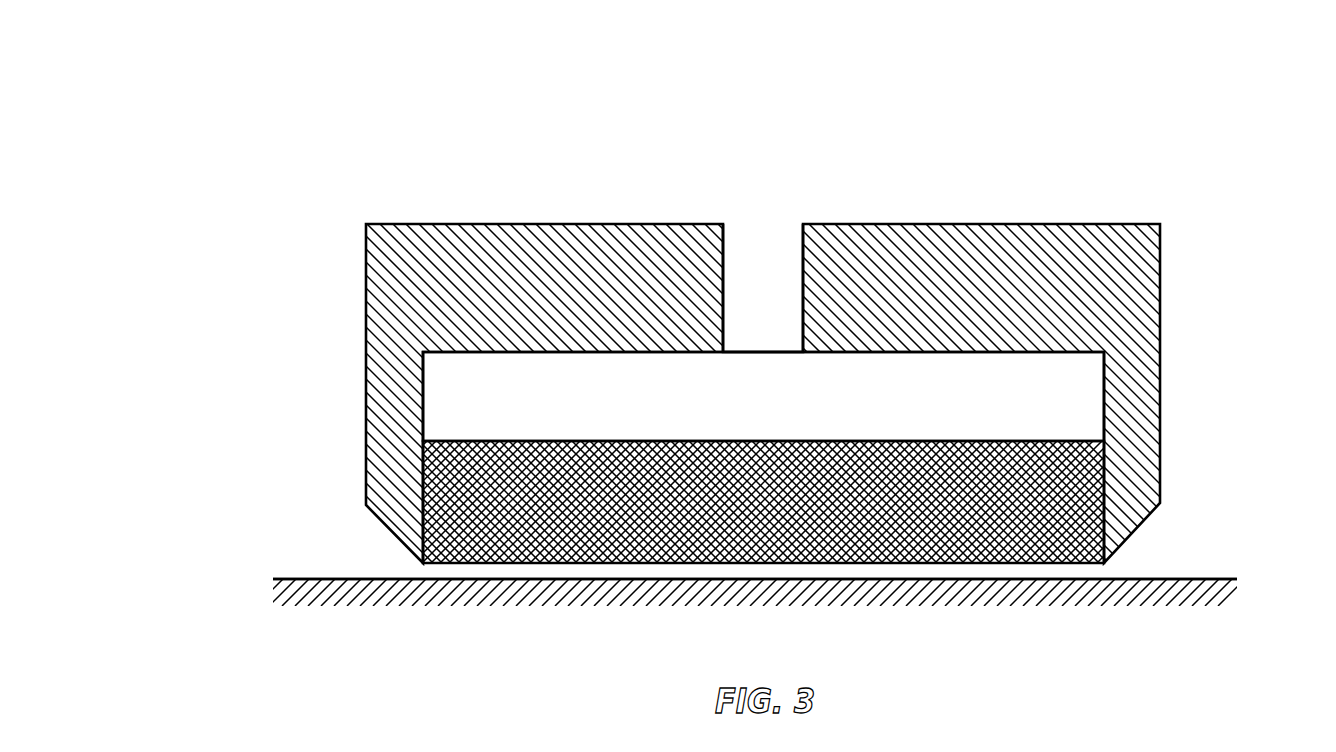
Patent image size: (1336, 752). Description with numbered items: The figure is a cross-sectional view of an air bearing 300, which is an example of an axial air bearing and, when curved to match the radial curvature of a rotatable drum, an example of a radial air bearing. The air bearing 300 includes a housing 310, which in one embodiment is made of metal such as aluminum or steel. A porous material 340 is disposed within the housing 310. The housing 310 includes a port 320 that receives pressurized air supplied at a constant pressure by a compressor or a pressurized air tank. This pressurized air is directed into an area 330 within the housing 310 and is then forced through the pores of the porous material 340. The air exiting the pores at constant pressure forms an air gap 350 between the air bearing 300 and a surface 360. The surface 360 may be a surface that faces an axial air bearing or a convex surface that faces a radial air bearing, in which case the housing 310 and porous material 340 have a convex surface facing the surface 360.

The air bearing 300 is at (228, 48).
The housing 310 is at (973, 285).
The port 320 is at (760, 260).
The area 330 is at (552, 397).
The porous material 340 is at (1025, 497).
The air gap 350 is at (1110, 569).
The surface 360 is at (392, 578).